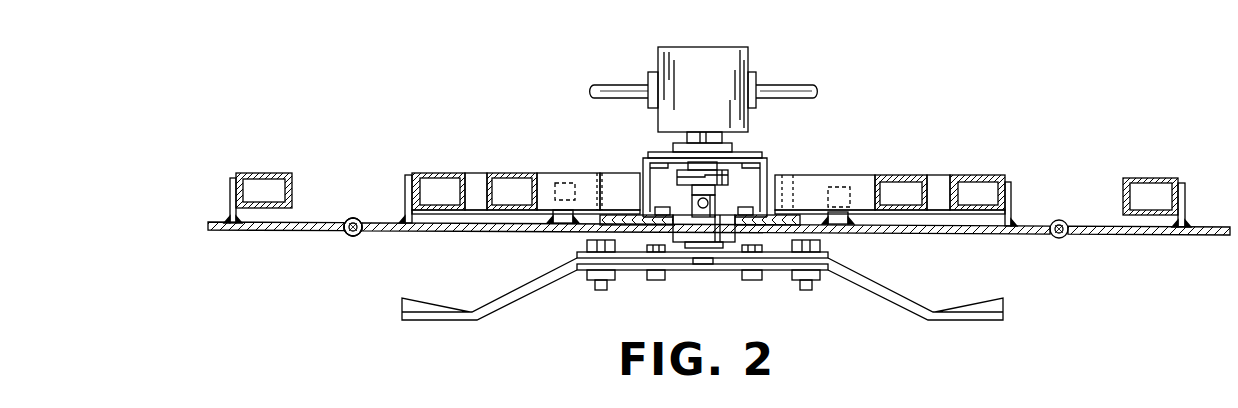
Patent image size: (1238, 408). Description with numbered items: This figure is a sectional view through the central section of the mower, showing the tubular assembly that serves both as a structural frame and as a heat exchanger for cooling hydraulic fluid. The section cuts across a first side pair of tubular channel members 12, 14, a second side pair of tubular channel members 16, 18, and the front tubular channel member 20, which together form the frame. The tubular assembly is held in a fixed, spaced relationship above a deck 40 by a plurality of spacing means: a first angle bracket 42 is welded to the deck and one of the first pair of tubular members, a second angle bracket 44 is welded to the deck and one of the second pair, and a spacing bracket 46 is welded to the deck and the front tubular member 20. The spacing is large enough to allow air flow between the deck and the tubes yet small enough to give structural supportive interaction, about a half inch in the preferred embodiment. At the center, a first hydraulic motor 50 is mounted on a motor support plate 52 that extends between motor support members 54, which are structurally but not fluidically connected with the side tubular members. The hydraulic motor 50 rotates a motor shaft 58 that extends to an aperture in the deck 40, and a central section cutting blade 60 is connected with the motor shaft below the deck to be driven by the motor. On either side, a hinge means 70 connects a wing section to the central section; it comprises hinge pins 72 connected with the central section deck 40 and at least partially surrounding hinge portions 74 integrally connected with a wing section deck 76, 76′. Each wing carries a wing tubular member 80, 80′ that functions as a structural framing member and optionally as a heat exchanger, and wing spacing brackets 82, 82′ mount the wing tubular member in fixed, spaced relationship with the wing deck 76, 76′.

The tubular channel member 12 is at (420, 173).
The tubular channel member 14 is at (495, 173).
The tubular channel member 16 is at (898, 182).
The tubular channel member 18 is at (957, 182).
The front tubular channel member 20 is at (595, 173).
The deck 40 is at (1030, 235).
The first angle bracket 42 is at (403, 208).
The second angle bracket 44 is at (1013, 203).
The spacing bracket 46 is at (557, 212).
The first hydraulic motor 50 is at (728, 68).
The motor support plate 52 is at (785, 215).
The motor support member 54 is at (550, 173).
The motor shaft 58 is at (720, 163).
The central section cutting blade 60 is at (838, 267).
The hinge means 70 is at (336, 244).
The hinge pin 72 is at (352, 236).
The hinge portion 74 is at (348, 220).
The wing section deck 76 is at (1122, 235).
The wing section deck 76′ is at (232, 232).
The wing tubular member 80 is at (1143, 180).
The wing tubular member 80′ is at (265, 173).
The wing spacing bracket 82 is at (1186, 210).
The wing spacing bracket 82′ is at (232, 192).